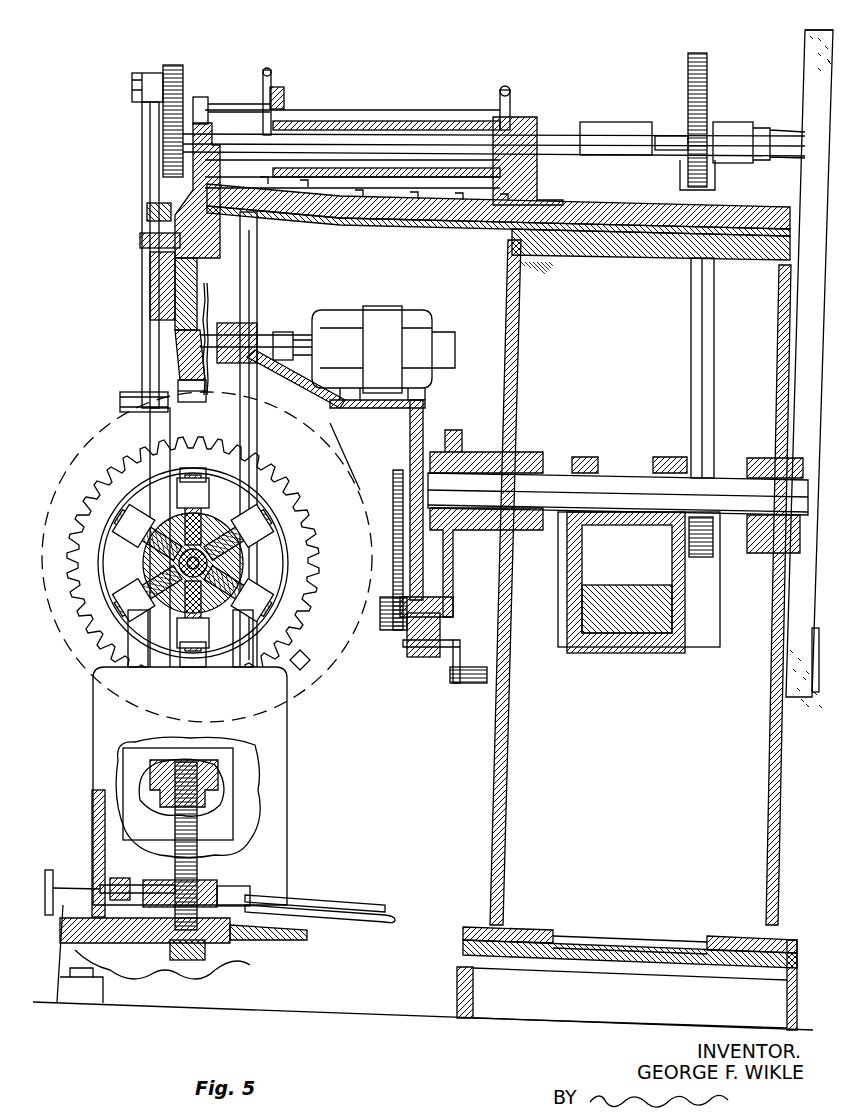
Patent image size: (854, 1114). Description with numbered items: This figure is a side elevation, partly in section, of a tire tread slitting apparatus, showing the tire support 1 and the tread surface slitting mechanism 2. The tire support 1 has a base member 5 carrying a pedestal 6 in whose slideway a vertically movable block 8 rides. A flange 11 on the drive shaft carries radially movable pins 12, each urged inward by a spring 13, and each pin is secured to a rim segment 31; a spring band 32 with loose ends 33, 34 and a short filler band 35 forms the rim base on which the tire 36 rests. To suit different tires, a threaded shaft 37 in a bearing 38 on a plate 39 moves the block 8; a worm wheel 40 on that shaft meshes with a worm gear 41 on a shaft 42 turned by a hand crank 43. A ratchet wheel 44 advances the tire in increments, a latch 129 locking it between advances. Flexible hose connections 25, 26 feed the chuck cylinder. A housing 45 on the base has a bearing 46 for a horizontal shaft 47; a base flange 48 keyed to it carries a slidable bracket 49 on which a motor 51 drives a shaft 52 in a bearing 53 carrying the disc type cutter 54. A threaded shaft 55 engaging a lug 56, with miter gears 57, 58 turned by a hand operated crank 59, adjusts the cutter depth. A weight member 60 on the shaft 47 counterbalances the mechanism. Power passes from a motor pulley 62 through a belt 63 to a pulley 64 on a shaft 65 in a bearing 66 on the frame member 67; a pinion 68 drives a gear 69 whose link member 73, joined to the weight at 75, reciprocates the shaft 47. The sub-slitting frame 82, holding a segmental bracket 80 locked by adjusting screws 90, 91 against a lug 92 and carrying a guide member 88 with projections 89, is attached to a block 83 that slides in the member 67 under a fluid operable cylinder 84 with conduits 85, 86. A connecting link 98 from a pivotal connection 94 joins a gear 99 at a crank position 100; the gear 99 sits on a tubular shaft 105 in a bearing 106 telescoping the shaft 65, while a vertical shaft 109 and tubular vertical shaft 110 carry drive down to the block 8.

The tire support 1 is at (302, 762).
The tread surface slitting mechanism 2 is at (449, 312).
The base member 5 is at (457, 1000).
The pedestal 6 is at (287, 778).
The vertically movable block 8 is at (160, 785).
The flange 11 is at (250, 568).
The radially movable pins 12 is at (262, 540).
The spring 13 is at (262, 568).
The flexible hose connection 25 is at (335, 900).
The flexible hose connection 26 is at (390, 910).
The rim segment 31 is at (285, 500).
The band 32 is at (245, 475).
The loose end of band 33 is at (155, 667).
The loose end of band 34 is at (235, 667).
The short length of band 35 is at (192, 670).
The tire 36 is at (318, 715).
The threaded shaft 37 is at (197, 862).
The bearing 38 is at (162, 959).
The plate 39 is at (307, 933).
The worm wheel 40 is at (245, 892).
The worm gear 41 is at (210, 882).
The shaft 42 is at (125, 886).
The hand crank 43 is at (60, 857).
The ratchet wheel 44 is at (115, 640).
The housing 45 is at (775, 860).
The bearing 46 is at (540, 455).
The shaft 47 is at (555, 513).
The base flange 48 is at (475, 452).
The bracket 49 is at (340, 437).
The motor 51 is at (388, 320).
The shaft 52 is at (282, 332).
The bearing 53 is at (260, 325).
The disc type cutter 54 is at (207, 295).
The threaded shaft 55 is at (400, 603).
The lug 56 is at (393, 520).
The miter gear 57 is at (392, 632).
The miter gear 58 is at (420, 658).
The hand operated crank 59 is at (475, 688).
The weight member 60 is at (615, 645).
The motor pulley 62 is at (814, 697).
The belt 63 is at (805, 60).
The pulley 64 is at (805, 70).
The shaft 65 is at (668, 136).
The bearing 66 is at (735, 125).
The frame member 67 is at (470, 230).
The pinion 68 is at (690, 186).
The gear 69 is at (688, 58).
The link member 73 is at (714, 332).
The pivotal connection 75 is at (713, 545).
The segmental bracket 80 is at (160, 456).
The frame 82 is at (190, 192).
The block 83 is at (375, 228).
The fluid operable cylinder 84 is at (330, 110).
The conduit 85 is at (508, 95).
The conduit 86 is at (270, 75).
The guide member 88 is at (185, 365).
The projections 89 is at (185, 385).
The adjusting screw 90 is at (147, 208).
The adjusting screw 91 is at (150, 280).
The lug 92 is at (140, 240).
The pivotal connection 94 is at (120, 400).
The connecting link 98 is at (142, 133).
The gear 99 is at (175, 65).
The crank position 100 is at (132, 84).
The shaft 105 is at (610, 125).
The bearing 106 is at (228, 115).
The vertical shaft 109 is at (257, 238).
The tubular vertical shaft 110 is at (257, 258).
The latch 129 is at (312, 670).